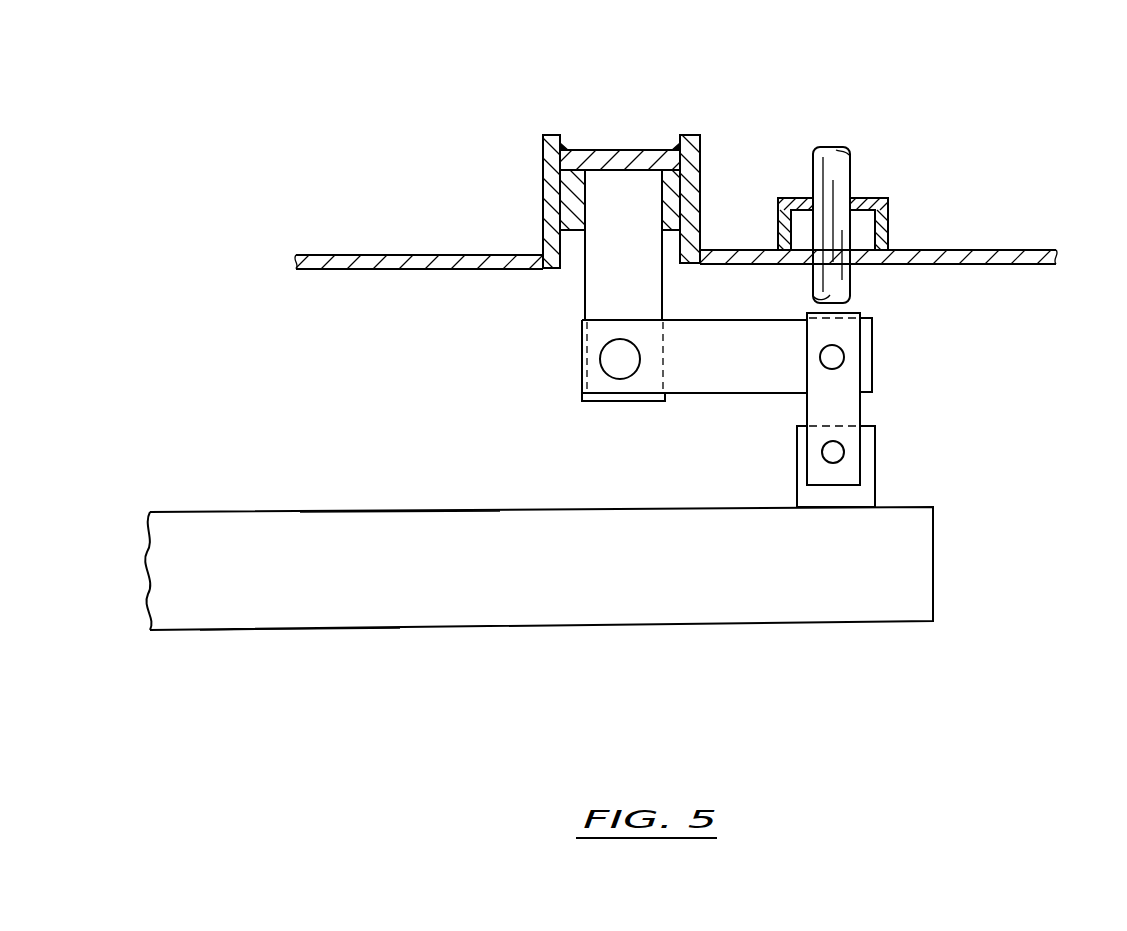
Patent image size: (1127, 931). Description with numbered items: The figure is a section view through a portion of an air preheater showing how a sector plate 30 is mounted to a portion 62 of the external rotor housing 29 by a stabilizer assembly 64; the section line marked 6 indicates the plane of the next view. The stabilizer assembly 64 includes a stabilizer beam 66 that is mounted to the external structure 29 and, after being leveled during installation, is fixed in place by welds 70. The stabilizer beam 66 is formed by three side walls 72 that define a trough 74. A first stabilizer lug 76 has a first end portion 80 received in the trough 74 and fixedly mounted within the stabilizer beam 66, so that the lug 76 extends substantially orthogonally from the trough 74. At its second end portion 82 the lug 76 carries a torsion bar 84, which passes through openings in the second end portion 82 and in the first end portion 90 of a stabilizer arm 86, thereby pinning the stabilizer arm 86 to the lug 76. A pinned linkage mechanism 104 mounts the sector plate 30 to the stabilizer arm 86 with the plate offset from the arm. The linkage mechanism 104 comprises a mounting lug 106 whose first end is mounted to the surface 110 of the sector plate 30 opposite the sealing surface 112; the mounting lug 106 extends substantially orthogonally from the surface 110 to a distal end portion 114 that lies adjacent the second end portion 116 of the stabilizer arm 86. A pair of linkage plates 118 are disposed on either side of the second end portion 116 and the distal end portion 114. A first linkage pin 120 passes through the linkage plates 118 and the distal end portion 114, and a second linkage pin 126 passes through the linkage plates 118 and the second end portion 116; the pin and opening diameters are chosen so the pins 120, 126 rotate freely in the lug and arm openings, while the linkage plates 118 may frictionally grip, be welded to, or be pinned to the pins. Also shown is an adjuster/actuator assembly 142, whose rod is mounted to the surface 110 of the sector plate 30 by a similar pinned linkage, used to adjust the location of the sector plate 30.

The section line 6- 6 is at (560, 125).
The external rotor housing 29 is at (1010, 250).
The sector plate 30 is at (380, 567).
The portion of the external preheater structure 62 is at (1030, 265).
The stabilizer assembly 64 is at (1022, 383).
The stabilizer beam 66 is at (672, 180).
The welds 70 is at (668, 150).
The side walls 72 is at (592, 150).
The trough 74 is at (578, 197).
The first stabilizer lug 76 is at (636, 275).
The first end portion of stabilizer lug 80 is at (628, 185).
The second end portion of stabilizer lug 82 is at (625, 403).
The torsion bar 84 is at (619, 359).
The first stabilizer arm 86 is at (742, 366).
The first end portion of stabilizer arm 90 is at (597, 333).
The pinned linkage mechanism 104 is at (772, 410).
The mounting lug 106 is at (860, 493).
The surface of the sector plate 110 is at (304, 512).
The sealing surface 112 is at (265, 630).
The distal end portion of mounting lug 114 is at (875, 438).
The second end portion of stabilizer arm 116 is at (872, 322).
The linkage plates 118 is at (845, 410).
The first linkage pin 120 is at (833, 452).
The second linkage pin 126 is at (832, 357).
The adjuster/actuator assembly 142 is at (890, 173).